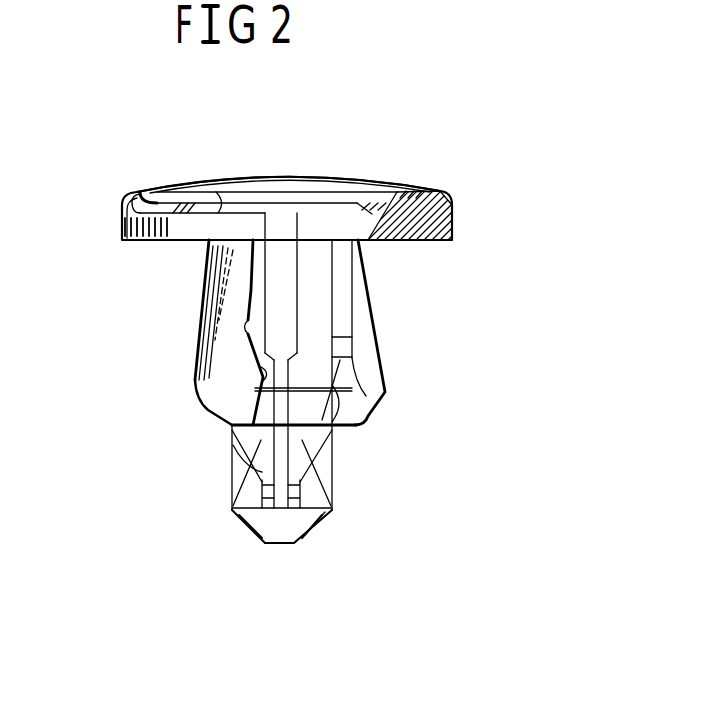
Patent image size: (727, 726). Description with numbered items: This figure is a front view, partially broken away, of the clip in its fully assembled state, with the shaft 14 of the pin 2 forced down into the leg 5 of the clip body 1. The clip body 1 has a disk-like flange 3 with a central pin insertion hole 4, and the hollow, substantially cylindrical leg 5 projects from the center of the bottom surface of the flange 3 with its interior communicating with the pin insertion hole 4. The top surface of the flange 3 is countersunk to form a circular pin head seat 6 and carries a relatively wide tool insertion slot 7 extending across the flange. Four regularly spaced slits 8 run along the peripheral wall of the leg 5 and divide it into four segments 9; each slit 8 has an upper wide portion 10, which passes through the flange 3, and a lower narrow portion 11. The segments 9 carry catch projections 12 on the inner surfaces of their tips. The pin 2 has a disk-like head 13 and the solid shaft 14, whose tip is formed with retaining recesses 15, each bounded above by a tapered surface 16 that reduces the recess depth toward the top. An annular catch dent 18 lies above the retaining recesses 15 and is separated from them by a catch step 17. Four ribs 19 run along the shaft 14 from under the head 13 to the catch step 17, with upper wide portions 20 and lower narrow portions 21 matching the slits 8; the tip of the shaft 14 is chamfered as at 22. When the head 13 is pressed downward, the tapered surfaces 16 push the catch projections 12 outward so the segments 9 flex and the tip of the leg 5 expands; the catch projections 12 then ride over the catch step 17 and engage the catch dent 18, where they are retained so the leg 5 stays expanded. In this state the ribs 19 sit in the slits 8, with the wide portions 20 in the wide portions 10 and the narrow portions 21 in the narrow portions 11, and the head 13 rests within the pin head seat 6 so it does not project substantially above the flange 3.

The clip body 1 is at (473, 179).
The pin 2 is at (359, 166).
The flange 3 is at (451, 215).
The pin insertion hole 4 is at (347, 240).
The leg 5 is at (199, 302).
The pin head seat 6 is at (397, 191).
The tool insertion slot 7 is at (121, 198).
The slits 8 is at (209, 277).
The segments 9 is at (198, 350).
The upper wide portion of slit 10 is at (245, 333).
The lower narrow portion of slit 11 is at (262, 378).
The catch projections 12 is at (305, 412).
The head 13 is at (217, 183).
The shaft 14 is at (320, 234).
The retaining recesses 15 is at (232, 488).
The tapered surface 16 is at (262, 449).
The catch step 17 is at (232, 430).
The catch dent 18 is at (310, 474).
The ribs 19 is at (364, 281).
The upper wide portions of ribs 20 is at (278, 252).
The lower narrow portions of ribs 21 is at (387, 395).
The chamfer 22 is at (284, 528).